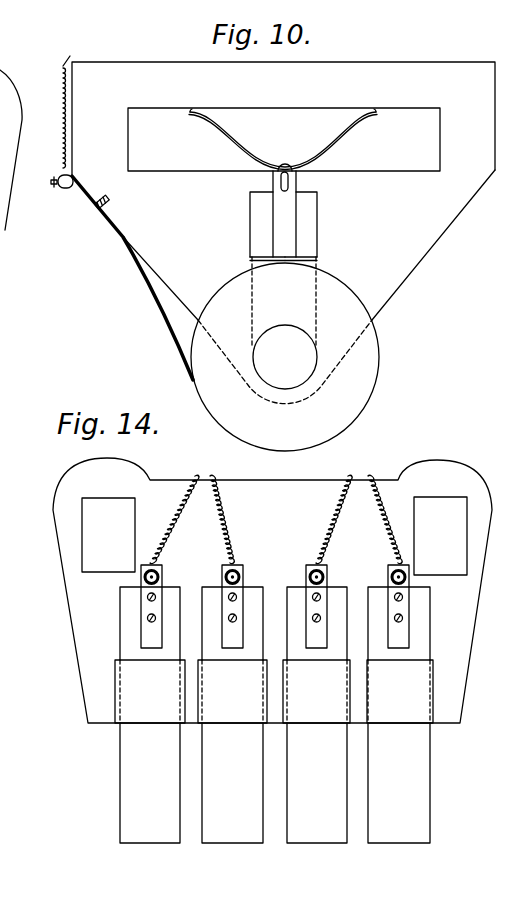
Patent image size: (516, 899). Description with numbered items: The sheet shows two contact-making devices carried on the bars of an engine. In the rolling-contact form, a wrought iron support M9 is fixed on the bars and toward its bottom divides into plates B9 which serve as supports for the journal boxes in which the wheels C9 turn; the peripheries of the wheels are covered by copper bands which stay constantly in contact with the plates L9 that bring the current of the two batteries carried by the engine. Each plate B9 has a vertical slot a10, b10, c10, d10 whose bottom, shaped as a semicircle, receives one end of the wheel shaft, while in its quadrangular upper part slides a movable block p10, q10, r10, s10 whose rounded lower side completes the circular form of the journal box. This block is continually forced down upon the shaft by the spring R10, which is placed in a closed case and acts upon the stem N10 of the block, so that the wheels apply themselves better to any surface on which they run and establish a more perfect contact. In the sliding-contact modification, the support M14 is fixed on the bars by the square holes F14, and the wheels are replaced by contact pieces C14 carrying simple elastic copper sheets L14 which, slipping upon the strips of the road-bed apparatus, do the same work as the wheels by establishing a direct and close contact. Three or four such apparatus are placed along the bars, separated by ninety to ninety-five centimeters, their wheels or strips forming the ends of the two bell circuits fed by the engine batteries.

In FIG. 10, the support M9 is at (283, 118).
In FIG. 10, the plates B9 is at (433, 245).
In FIG. 10, the spring R10 is at (284, 139).
In FIG. 10, the stem of the movable block N10 is at (289, 214).
In FIG. 10, the vertical slot b10 is at (254, 215).
In FIG. 10, the vertical slot c10 is at (321, 216).
In FIG. 10, the movable block p10 is at (257, 250).
In FIG. 10, the movable block q10 is at (321, 248).
In FIG. 10, the movable block r10 is at (265, 302).
In FIG. 10, the movable block s10 is at (310, 302).
In FIG. 10, the vertical slot a10 is at (276, 357).
In FIG. 10, the vertical slot d10 is at (285, 362).
In FIG. 10, the wheels C9 is at (285, 357).
In FIG. 10, the plates L9 is at (150, 297).
In FIG. 14, the support M14 is at (272, 590).
In FIG. 14, the square holes F14 is at (274, 536).
In FIG. 14, the contact pieces C14 is at (274, 644).
In FIG. 14, the elastic copper sheets L14 is at (275, 751).